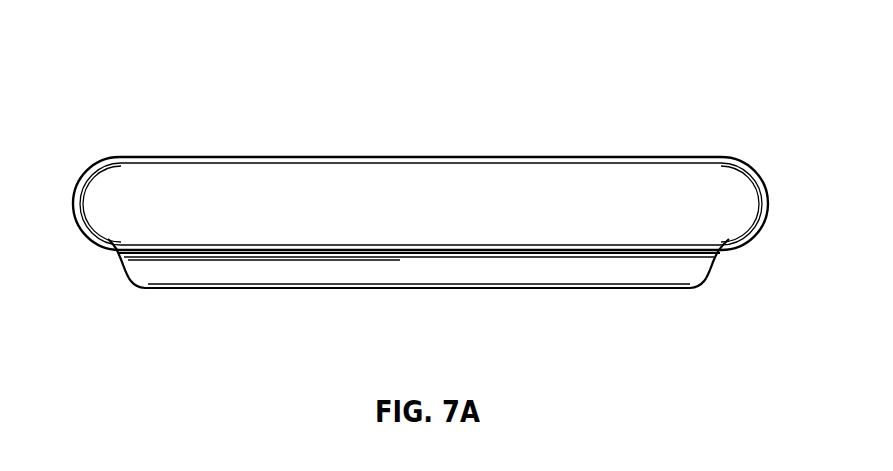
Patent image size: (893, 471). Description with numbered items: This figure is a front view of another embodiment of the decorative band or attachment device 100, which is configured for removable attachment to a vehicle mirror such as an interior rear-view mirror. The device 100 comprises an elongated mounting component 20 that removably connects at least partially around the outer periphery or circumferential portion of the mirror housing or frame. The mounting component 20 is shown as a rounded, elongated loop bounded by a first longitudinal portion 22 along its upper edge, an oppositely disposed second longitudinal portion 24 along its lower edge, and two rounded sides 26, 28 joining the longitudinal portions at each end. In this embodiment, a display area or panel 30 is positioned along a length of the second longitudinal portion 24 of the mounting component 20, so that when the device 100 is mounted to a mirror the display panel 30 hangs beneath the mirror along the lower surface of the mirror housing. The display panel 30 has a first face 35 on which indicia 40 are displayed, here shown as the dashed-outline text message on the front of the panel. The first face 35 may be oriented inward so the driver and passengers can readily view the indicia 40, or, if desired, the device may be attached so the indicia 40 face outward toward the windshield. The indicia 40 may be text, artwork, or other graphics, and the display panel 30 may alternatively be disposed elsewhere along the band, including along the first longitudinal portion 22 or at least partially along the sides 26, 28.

The band or attachment device 100 is at (420, 190).
The mounting component 20 is at (420, 163).
The first longitudinal portion 22 is at (316, 159).
The second longitudinal portion 24 is at (622, 247).
The side 26 is at (88, 188).
The side 28 is at (753, 202).
The display area or panel 30 is at (418, 307).
The first face 35 is at (193, 272).
The indicia 40 is at (400, 269).